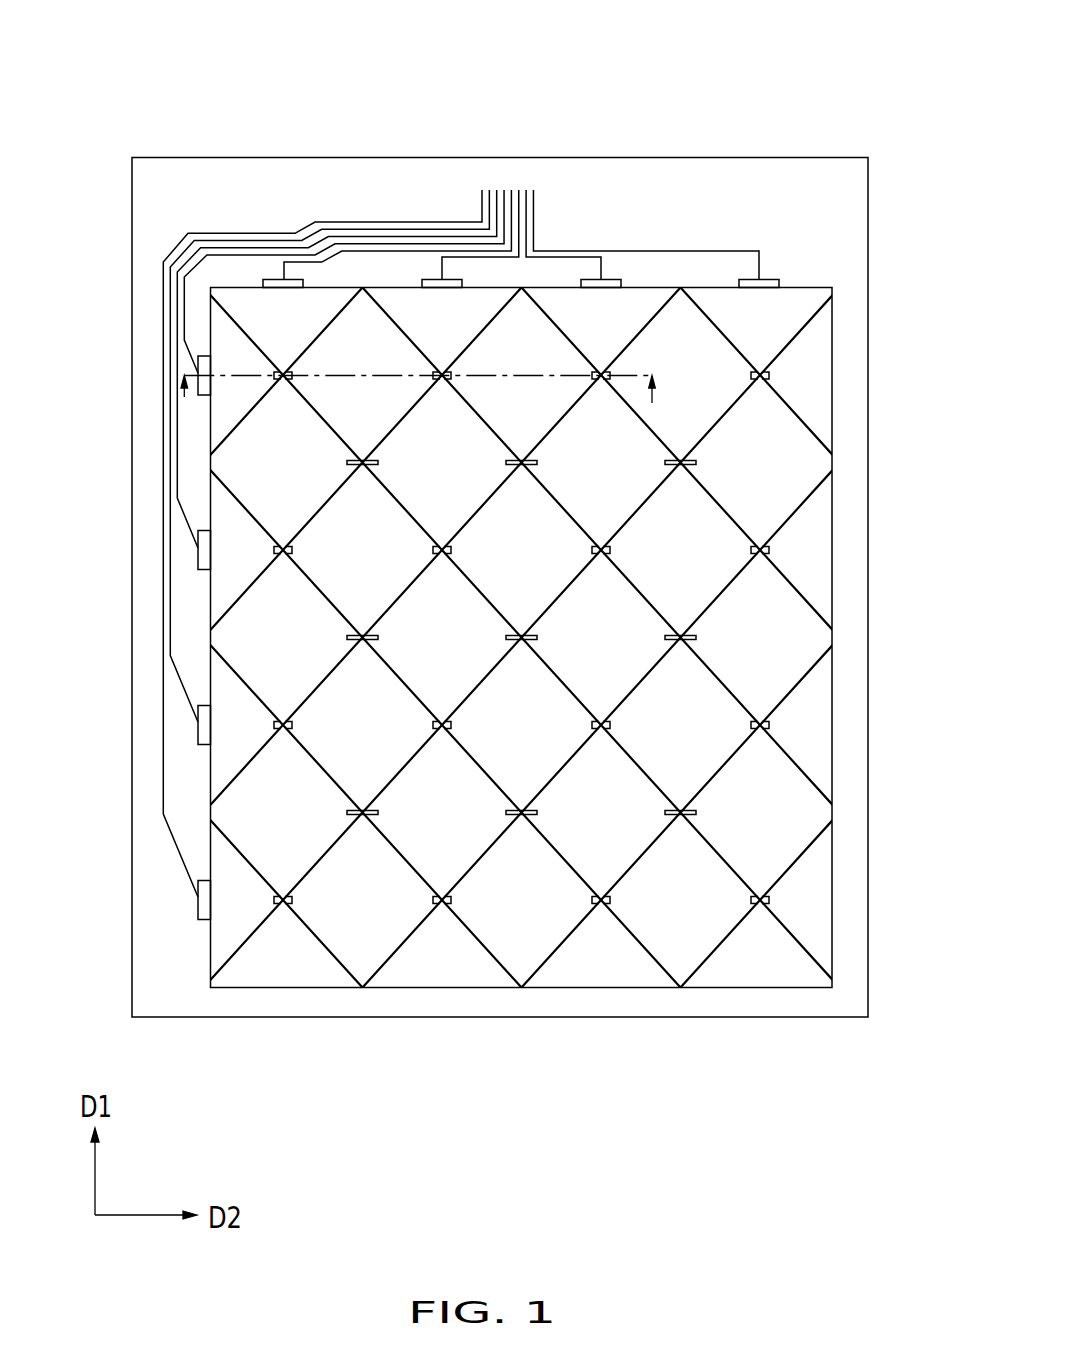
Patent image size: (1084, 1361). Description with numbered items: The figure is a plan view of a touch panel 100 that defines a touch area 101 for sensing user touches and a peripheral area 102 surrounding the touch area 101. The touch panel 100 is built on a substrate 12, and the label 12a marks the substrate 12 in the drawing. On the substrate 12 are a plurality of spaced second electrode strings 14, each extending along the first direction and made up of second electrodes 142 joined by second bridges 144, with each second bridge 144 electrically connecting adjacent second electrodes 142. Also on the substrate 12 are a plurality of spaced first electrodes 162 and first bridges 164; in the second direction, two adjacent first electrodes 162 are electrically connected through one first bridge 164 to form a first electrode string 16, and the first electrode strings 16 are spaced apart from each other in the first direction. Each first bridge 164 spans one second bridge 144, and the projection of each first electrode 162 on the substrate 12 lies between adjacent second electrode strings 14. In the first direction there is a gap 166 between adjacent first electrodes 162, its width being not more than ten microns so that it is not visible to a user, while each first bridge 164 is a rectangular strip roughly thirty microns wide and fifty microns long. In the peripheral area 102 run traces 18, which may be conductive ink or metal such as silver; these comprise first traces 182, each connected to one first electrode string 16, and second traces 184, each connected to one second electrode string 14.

The touch panel 100 is at (445, 44).
The substrate 12 is at (870, 672).
The surface of substrate 12a is at (847, 532).
The touch area 101 is at (805, 365).
The peripheral area 102 is at (843, 212).
The second electrode string 14 is at (284, 958).
The second electrode 142 is at (484, 302).
The second bridge 144 is at (765, 727).
The first electrode string 16 is at (236, 901).
The first electrode 162 is at (505, 362).
The first bridge 164 is at (430, 547).
The gap 166 is at (348, 462).
The traces 18 is at (185, 82).
The first trace 182 is at (281, 276).
The second trace 184 is at (161, 303).